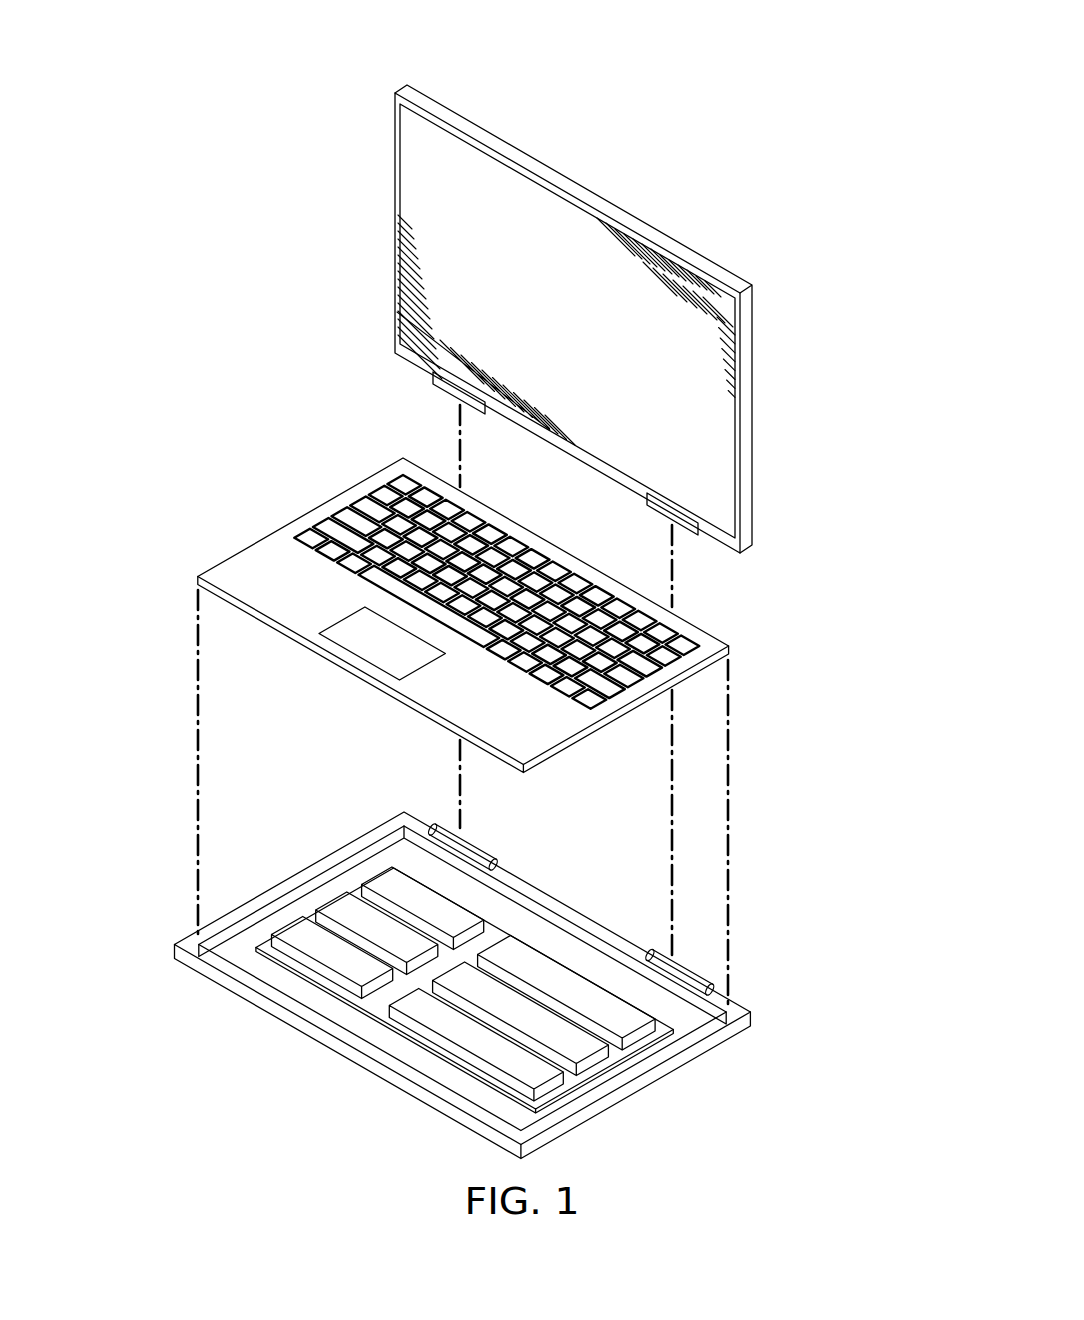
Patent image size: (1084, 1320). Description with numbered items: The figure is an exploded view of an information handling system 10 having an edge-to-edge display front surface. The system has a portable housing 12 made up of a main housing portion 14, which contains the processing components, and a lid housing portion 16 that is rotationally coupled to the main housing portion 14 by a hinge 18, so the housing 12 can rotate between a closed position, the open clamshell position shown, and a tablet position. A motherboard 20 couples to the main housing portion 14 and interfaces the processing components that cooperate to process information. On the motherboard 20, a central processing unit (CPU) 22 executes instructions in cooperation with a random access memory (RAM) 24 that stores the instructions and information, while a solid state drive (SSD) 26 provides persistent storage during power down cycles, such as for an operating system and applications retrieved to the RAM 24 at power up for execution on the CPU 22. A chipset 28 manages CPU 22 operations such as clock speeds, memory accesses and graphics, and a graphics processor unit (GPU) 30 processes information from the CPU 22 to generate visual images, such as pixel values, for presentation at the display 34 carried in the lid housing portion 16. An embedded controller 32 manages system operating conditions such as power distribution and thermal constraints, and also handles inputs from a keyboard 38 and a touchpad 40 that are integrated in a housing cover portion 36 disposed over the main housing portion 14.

The information handling system 10 is at (241, 136).
The housing 12 is at (785, 1089).
The main housing portion 14 is at (420, 1089).
The lid housing portion 16 is at (578, 186).
The hinge 18 is at (683, 962).
The motherboard 20 is at (382, 1000).
The central processing unit (CPU) 22 is at (383, 878).
The random access memory (RAM) 24 is at (338, 903).
The solid state drive (SSD) 26 is at (295, 928).
The chipset 28 is at (632, 1022).
The graphics processor unit (GPU) 30 is at (582, 1050).
The embedded controller 32 is at (537, 1077).
The display 34 is at (587, 350).
The housing cover portion 36 is at (237, 555).
The keyboard 38 is at (360, 500).
The touchpad 40 is at (362, 658).